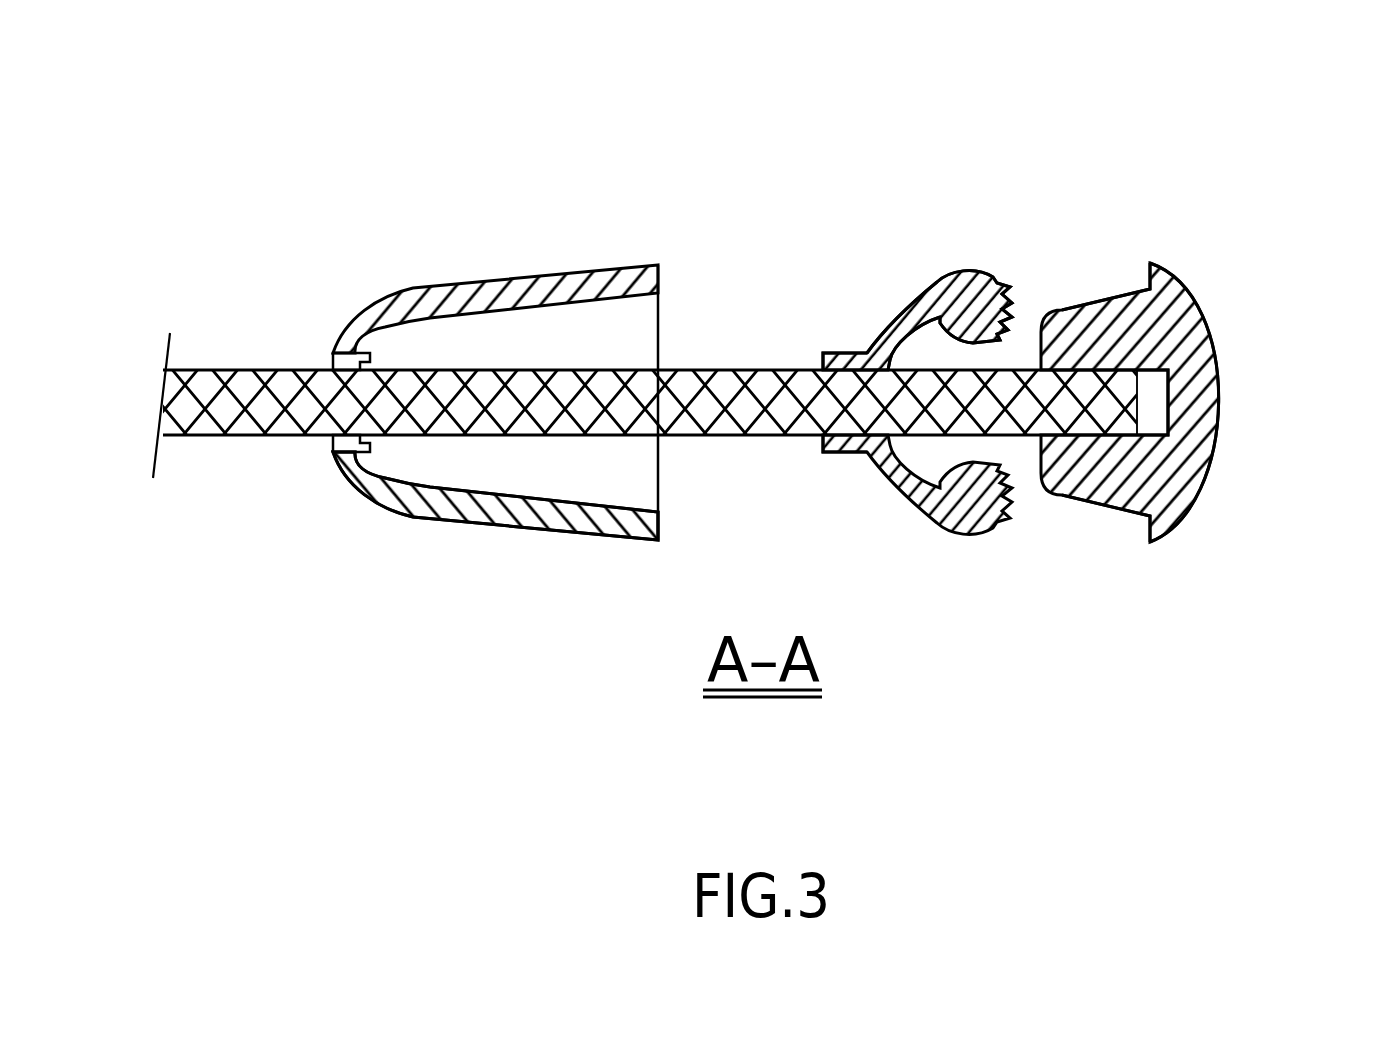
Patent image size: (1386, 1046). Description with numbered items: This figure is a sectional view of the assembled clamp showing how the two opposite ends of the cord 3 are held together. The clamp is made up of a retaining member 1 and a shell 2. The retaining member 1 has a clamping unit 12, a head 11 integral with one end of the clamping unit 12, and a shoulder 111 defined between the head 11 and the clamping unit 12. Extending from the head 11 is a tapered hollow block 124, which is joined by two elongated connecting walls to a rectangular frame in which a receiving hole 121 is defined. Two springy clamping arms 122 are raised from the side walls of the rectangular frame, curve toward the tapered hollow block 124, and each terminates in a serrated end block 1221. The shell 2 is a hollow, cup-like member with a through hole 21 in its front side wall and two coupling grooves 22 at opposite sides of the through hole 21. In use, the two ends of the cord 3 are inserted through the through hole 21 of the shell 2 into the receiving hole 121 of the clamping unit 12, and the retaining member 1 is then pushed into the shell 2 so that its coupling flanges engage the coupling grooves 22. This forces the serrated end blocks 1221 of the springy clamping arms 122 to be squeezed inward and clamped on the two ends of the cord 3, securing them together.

The retaining member 1 is at (1034, 282).
The head 11 is at (1193, 293).
The shoulder 111 is at (1148, 273).
The clamping unit 12 is at (1007, 452).
The receiving hole 121 is at (1160, 387).
The springy clamping arms 122 is at (897, 312).
The serrated end block 1221 is at (960, 277).
The tapered hollow block 124 is at (1067, 487).
The shell 2 is at (498, 278).
The through hole 21 is at (325, 443).
The coupling grooves 22 is at (373, 362).
The cord 3 is at (727, 365).